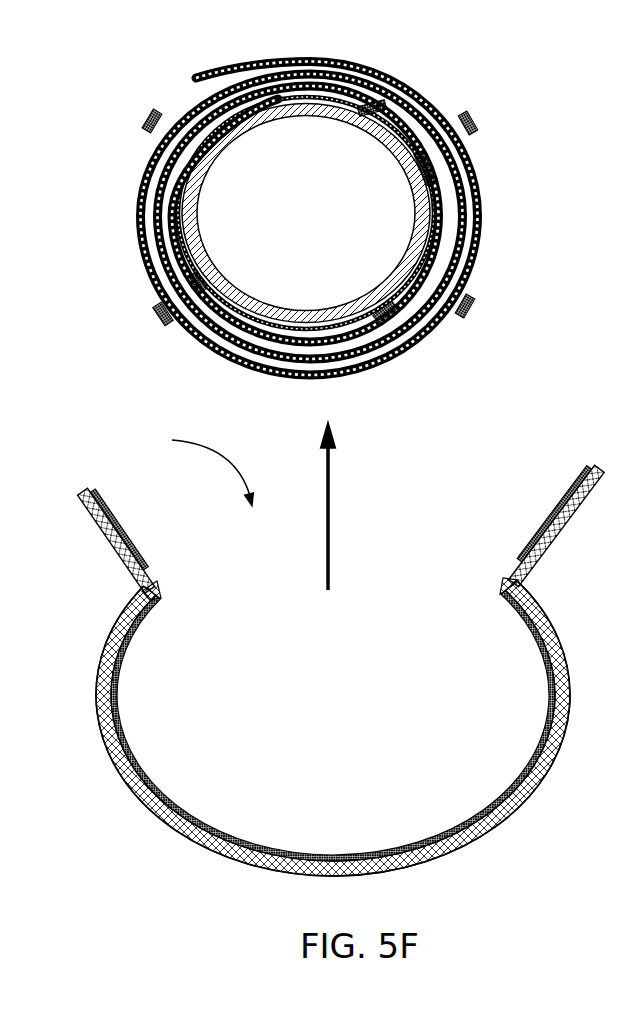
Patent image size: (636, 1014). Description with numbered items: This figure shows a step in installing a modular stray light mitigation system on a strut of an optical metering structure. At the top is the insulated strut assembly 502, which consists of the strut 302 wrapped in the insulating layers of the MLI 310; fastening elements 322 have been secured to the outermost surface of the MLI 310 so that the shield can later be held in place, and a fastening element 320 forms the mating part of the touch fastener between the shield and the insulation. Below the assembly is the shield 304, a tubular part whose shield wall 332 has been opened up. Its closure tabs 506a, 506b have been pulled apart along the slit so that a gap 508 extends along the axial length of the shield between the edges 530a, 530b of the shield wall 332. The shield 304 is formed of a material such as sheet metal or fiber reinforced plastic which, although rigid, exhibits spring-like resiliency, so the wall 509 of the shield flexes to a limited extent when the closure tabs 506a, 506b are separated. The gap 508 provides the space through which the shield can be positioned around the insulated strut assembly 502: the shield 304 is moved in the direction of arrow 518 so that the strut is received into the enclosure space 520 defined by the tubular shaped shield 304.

The insulated strut assembly 502 is at (274, 205).
The fastening elements 322 is at (283, 209).
The MLI 310 is at (138, 186).
The strut 302 is at (197, 240).
The gap 508 is at (190, 471).
The closure tab 506a is at (104, 535).
The closure tab 506b is at (557, 537).
The edge 530a is at (157, 580).
The edge 530b is at (502, 574).
The arrow 518 is at (330, 562).
The fastening element 320 is at (127, 663).
The shield wall 332 is at (565, 722).
The enclosure space 520 is at (358, 734).
The wall 509 is at (143, 800).
The shield 304 is at (332, 669).